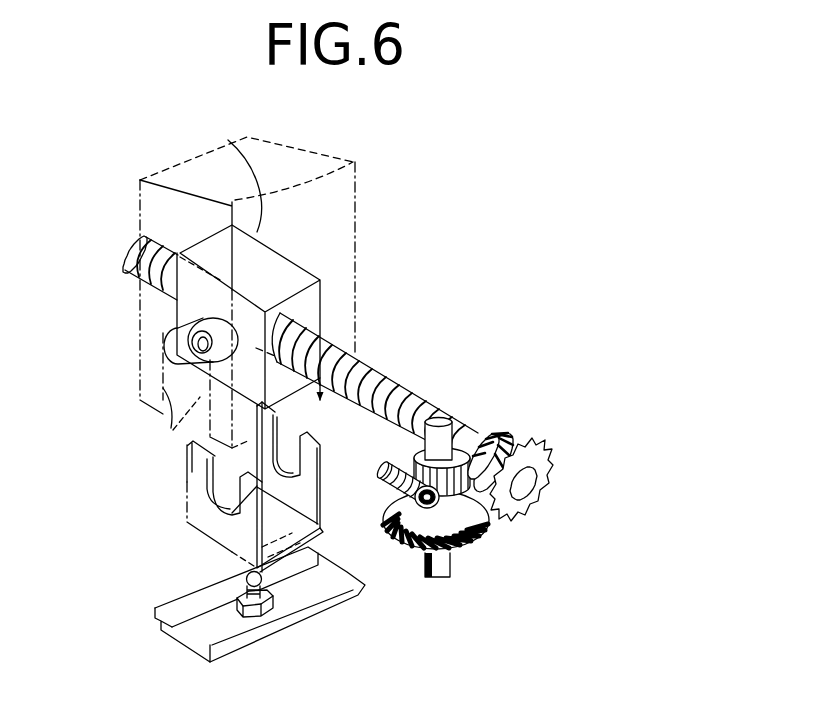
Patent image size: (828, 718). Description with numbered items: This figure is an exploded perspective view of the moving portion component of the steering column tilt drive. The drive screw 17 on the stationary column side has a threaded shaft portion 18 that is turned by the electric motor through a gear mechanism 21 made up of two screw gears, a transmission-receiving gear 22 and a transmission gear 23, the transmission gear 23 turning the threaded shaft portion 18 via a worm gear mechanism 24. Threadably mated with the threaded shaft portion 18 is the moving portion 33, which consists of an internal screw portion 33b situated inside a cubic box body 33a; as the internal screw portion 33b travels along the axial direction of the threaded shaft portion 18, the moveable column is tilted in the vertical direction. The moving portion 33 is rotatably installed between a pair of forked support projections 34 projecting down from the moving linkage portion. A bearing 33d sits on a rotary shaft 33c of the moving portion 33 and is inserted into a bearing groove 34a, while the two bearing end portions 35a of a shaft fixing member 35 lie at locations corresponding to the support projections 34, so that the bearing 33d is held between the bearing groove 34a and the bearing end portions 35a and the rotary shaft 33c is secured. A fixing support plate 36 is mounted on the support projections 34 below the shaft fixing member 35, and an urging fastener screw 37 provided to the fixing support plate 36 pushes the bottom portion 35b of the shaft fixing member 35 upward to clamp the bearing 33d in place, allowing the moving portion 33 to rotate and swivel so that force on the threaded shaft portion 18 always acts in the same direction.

The drive screw 17 is at (464, 416).
The threaded shaft portion 18 is at (402, 388).
The gear mechanism 21 is at (558, 472).
The transmission-receiving gear 22 is at (540, 495).
The transmission gear 23 is at (480, 537).
The worm gear mechanism 24 is at (405, 460).
The moving portion 33 is at (297, 263).
The cubic box body 33a is at (225, 176).
The internal screw portion 33b is at (322, 334).
The rotary shaft 33c is at (217, 357).
The bearing 33d is at (207, 345).
The support projections 34 is at (356, 350).
The bearing groove 34a is at (170, 413).
The shaft fixing member 35 is at (252, 487).
The bearing end portions 35a is at (276, 424).
The bottom portion 35b is at (186, 517).
The fixing support plate 36 is at (340, 608).
The urging fastener screw 37 is at (246, 576).